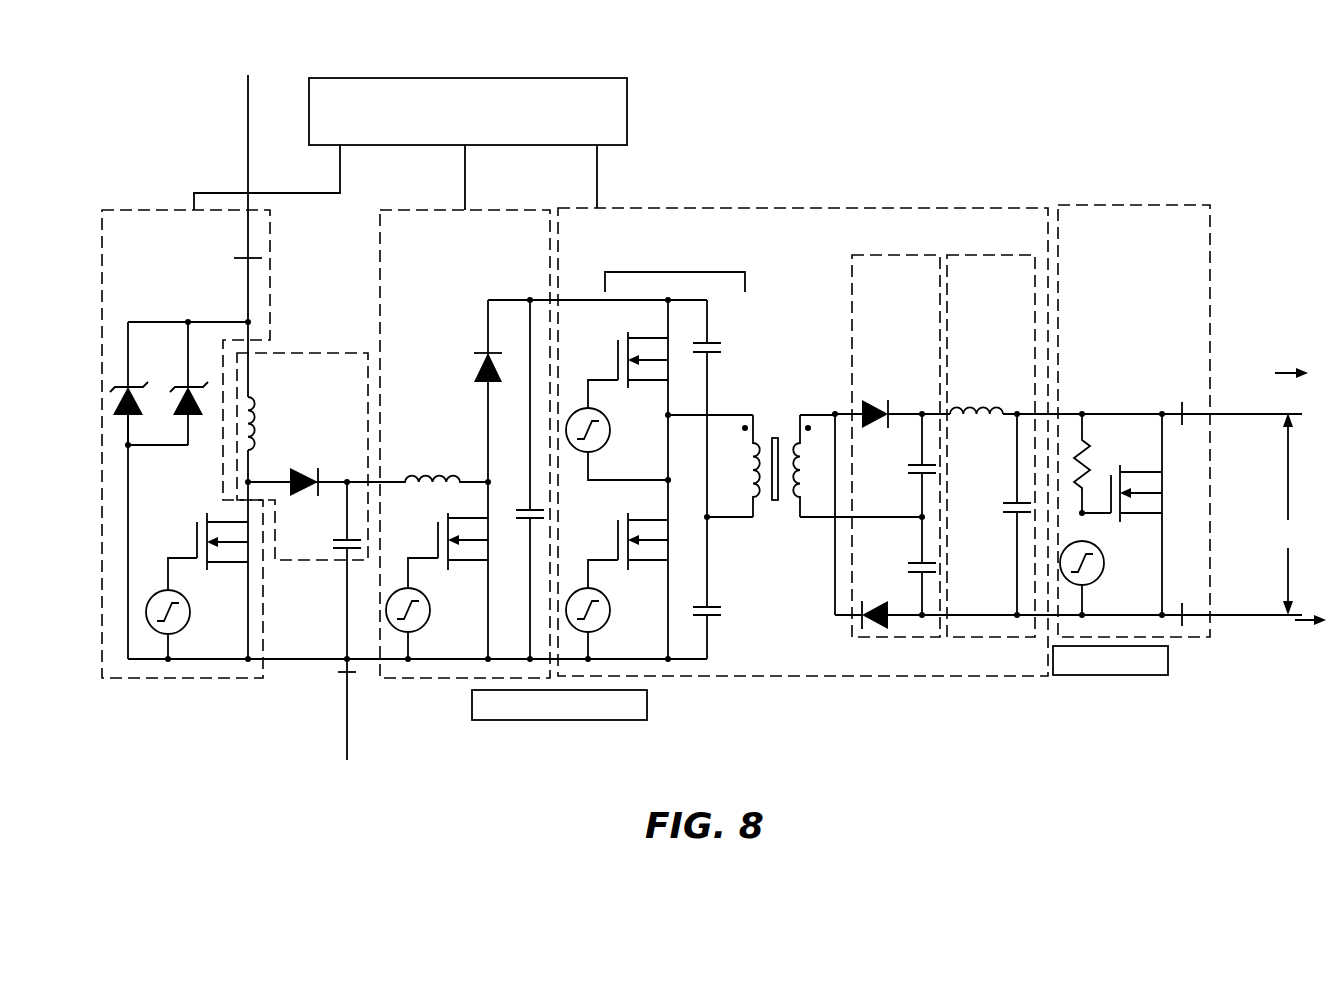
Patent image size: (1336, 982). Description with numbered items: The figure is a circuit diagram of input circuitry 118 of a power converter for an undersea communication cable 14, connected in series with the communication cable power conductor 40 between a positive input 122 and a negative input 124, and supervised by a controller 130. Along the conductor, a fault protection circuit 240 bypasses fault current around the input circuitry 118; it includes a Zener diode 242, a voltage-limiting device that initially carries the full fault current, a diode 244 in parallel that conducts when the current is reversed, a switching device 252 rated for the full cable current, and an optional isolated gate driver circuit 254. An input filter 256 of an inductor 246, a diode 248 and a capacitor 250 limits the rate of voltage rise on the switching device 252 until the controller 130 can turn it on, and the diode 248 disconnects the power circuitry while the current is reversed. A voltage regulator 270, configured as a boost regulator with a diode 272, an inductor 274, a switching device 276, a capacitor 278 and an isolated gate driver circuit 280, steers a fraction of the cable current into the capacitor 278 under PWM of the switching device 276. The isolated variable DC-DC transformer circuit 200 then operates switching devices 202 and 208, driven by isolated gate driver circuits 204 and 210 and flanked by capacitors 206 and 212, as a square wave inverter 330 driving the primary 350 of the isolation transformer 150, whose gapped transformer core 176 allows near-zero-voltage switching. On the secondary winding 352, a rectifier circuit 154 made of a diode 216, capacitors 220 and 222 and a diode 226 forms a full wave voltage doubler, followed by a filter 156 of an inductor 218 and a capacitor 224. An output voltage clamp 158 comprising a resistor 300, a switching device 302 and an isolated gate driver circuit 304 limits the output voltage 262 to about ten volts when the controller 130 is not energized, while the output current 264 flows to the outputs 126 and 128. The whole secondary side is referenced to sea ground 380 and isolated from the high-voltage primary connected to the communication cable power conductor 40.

The undersea communication cable 14 is at (647, 708).
The communication cable power conductor 40 is at (248, 149).
The input circuitry 118 is at (116, 148).
The positive input 122 is at (220, 179).
The negative input 124 is at (344, 707).
The output 126 is at (1222, 412).
The output 128 is at (1225, 617).
The controller 130 is at (443, 137).
The isolation transformer 150 is at (781, 406).
The rectifier circuit 154 is at (910, 307).
The filter 156 is at (1002, 307).
The output voltage clamp 158 is at (1115, 292).
The transformer core 176 is at (776, 500).
The isolated variable DC-DC transformer circuit 200 is at (996, 235).
The switching device 202 is at (617, 361).
The isolated gate driver circuit 204 is at (608, 445).
The capacitor 206 is at (723, 352).
The switching device 208 is at (617, 541).
The isolated gate driver circuit 210 is at (604, 626).
The capacitor 212 is at (722, 614).
The diode 216 is at (877, 428).
The inductor 218 is at (980, 403).
The capacitor 220 is at (908, 471).
The capacitor 222 is at (908, 565).
The capacitor 224 is at (1003, 508).
The diode 226 is at (876, 607).
The fault protection circuit 240 is at (152, 270).
The Zener diode 242 is at (140, 412).
The diode 244 is at (175, 398).
The inductor 246 is at (262, 412).
The diode 248 is at (302, 470).
The capacitor 250 is at (330, 548).
The switching device 252 is at (197, 521).
The isolated gate driver circuit 254 is at (182, 630).
The input filter 256 is at (302, 562).
The output voltage 262 is at (1292, 520).
The output current Iout 264 is at (1306, 384).
The voltage regulator 270 is at (438, 266).
The diode 272 is at (474, 370).
The inductor 274 is at (432, 470).
The switching device 276 is at (432, 540).
The capacitor 278 is at (516, 514).
The isolated gate driver circuit 280 is at (428, 600).
The resistor 300 is at (1084, 445).
The switching device 302 is at (1162, 482).
The isolated gate driver circuit 304 is at (1104, 565).
The inverter 330 is at (745, 281).
The primary 350 is at (760, 490).
The secondary winding 352 is at (790, 490).
The sea ground 380 is at (1103, 675).